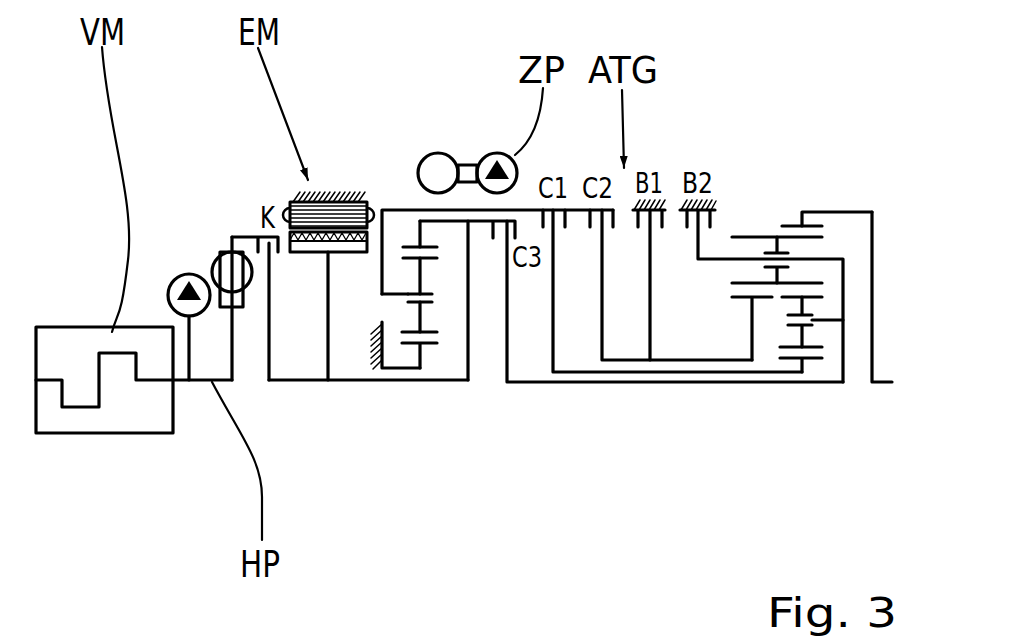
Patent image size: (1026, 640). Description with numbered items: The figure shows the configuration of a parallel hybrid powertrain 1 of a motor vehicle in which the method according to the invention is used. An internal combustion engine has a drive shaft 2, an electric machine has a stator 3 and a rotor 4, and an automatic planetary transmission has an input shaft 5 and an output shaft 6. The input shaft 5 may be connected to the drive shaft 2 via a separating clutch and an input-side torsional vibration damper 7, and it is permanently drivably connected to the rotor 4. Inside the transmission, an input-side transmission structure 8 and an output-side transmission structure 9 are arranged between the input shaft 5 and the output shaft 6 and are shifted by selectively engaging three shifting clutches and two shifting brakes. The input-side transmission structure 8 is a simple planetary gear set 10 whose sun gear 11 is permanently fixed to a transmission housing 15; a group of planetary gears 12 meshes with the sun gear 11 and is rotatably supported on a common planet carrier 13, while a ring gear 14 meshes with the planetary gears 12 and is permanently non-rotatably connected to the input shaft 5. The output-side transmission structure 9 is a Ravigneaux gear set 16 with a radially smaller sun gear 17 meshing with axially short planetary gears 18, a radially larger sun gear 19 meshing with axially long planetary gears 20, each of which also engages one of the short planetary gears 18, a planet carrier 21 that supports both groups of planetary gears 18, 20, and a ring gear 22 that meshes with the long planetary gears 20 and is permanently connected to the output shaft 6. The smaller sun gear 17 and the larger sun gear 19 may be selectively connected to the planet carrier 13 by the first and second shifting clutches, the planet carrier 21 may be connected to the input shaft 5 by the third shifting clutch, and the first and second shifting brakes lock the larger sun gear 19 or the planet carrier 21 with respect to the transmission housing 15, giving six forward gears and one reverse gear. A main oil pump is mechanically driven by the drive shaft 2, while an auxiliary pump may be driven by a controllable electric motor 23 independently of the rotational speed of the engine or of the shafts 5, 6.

The parallel hybrid powertrain 1 is at (178, 160).
The drive shaft 2 is at (185, 382).
The stator 3 is at (290, 200).
The rotor 4 is at (308, 252).
The input shaft 5 is at (405, 368).
The output shaft 6 is at (877, 384).
The torsional vibration damper 7 is at (226, 255).
The input-side transmission structure 8 is at (405, 192).
The output-side transmission structure 9 is at (772, 213).
The simple planetary gear set 10 is at (405, 192).
The sun gear 11 is at (420, 348).
The planetary gears 12 is at (425, 313).
The planet carrier 13 is at (381, 263).
The ring gear 14 is at (417, 231).
The transmission housing 15 is at (380, 346).
The Ravigneaux gear set 16 is at (772, 213).
The radially smaller sun gear 17 is at (802, 373).
The axially short planetary gears 18 is at (795, 335).
The radially larger sun gear 19 is at (802, 302).
The axially long planetary gears 20 is at (768, 235).
The planet carrier 21 is at (723, 260).
The ring gear 22 is at (803, 213).
The electric motor 23 is at (438, 155).